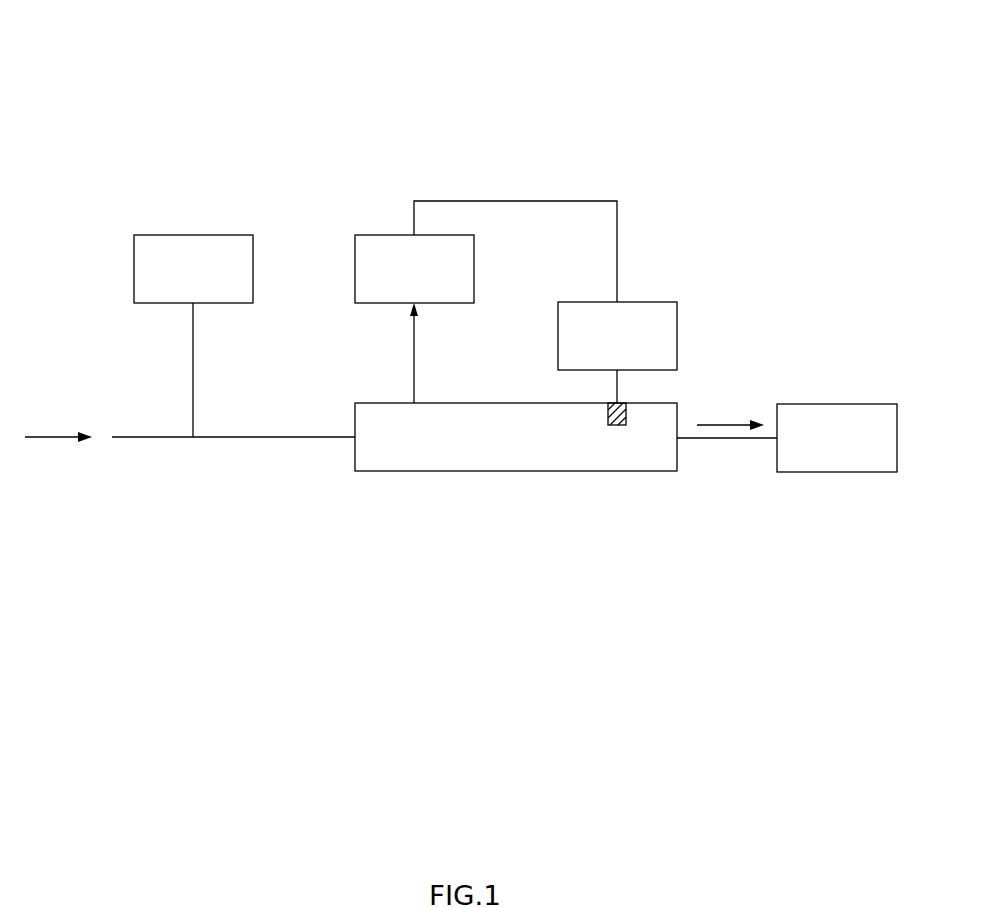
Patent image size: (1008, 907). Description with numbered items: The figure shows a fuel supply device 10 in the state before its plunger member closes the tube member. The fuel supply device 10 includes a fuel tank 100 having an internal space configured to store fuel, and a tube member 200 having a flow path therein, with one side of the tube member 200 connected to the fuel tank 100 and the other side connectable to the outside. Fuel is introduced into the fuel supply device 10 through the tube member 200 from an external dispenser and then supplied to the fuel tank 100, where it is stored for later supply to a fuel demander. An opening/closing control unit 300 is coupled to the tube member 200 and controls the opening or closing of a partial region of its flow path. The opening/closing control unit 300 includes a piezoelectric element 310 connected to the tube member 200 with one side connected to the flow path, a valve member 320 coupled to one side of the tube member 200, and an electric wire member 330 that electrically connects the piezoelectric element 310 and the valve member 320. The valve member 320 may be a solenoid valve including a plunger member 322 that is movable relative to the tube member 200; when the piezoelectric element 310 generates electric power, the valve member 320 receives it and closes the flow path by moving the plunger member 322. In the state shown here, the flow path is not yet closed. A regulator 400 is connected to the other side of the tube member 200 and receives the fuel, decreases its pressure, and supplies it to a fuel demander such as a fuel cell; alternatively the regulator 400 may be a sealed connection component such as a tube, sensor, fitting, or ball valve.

The fuel supply device 10 is at (103, 35).
The fuel tank 100 is at (193, 235).
The tube member 200 is at (355, 450).
The opening/closing control unit 300 is at (653, 128).
The piezoelectric element 310 is at (380, 235).
The valve member 320 is at (653, 302).
The plunger member 322 is at (617, 425).
The electric wire member 330 is at (512, 201).
The regulator 400 is at (838, 404).